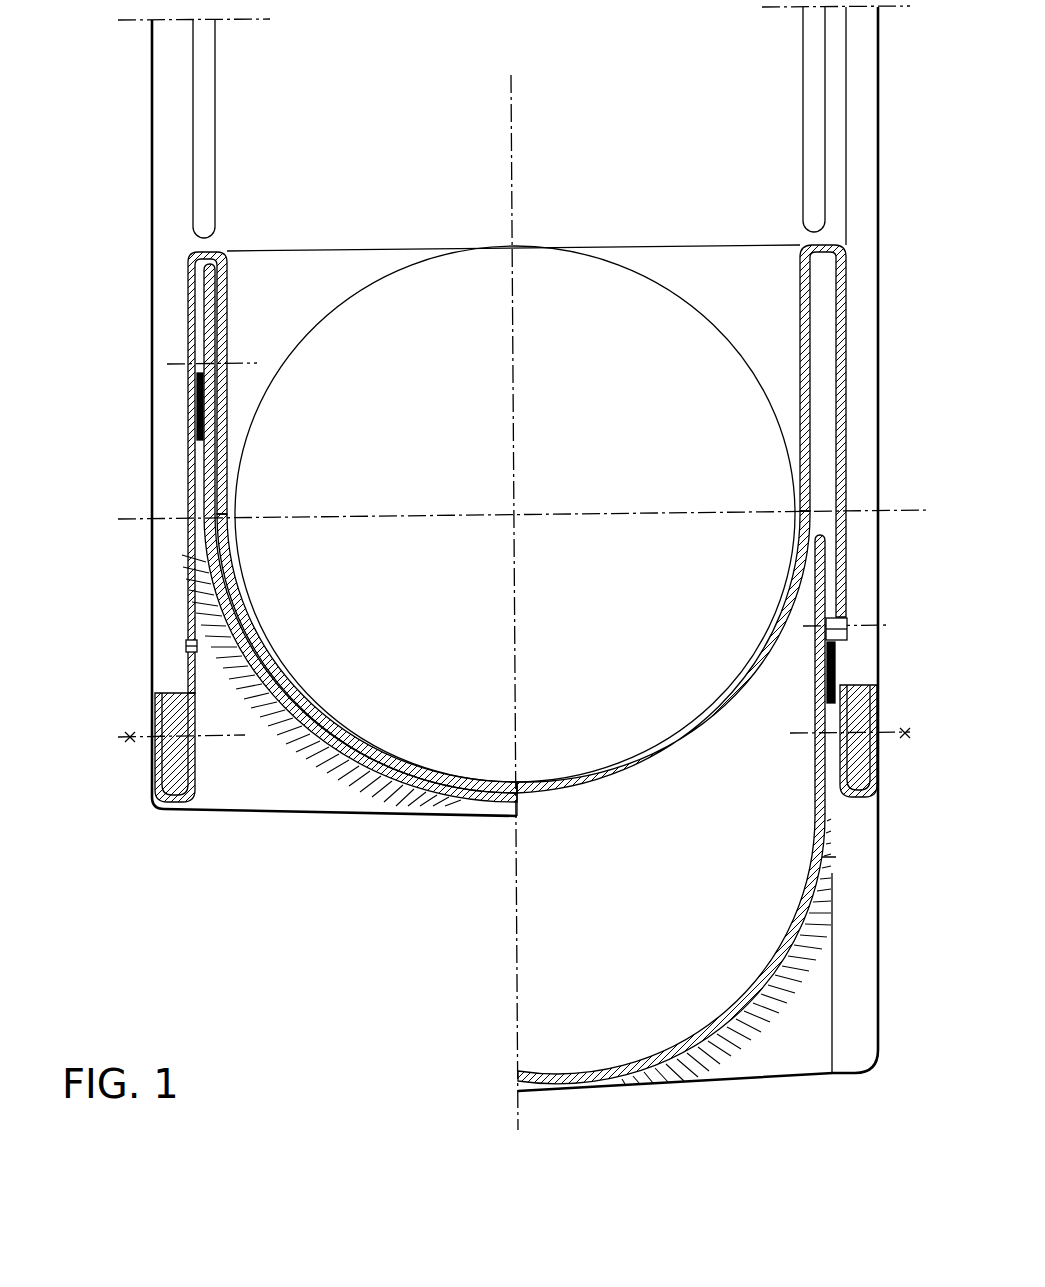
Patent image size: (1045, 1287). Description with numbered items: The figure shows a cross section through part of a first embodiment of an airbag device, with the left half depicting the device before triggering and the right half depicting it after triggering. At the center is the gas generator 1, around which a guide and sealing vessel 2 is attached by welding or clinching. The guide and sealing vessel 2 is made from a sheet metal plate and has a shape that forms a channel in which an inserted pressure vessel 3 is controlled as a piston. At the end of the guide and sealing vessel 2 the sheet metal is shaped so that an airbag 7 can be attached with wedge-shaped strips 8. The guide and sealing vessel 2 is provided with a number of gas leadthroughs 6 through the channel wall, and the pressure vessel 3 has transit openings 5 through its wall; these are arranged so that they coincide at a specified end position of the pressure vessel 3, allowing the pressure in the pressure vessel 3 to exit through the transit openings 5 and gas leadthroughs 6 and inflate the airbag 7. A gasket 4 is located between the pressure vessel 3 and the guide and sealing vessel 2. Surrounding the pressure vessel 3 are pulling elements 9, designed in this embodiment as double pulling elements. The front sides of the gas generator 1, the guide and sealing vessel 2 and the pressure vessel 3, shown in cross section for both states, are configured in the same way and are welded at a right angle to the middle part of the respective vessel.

The gas generator 1 is at (663, 287).
The guide and sealing vessel 2 is at (800, 282).
The pressure vessel 3 is at (273, 693).
The gasket 4 is at (212, 402).
The transit openings 5 is at (205, 365).
The gas leadthroughs 6 is at (190, 645).
The airbag 7 is at (212, 133).
The wedge-shaped strips 8 is at (177, 693).
The pulling elements 9 is at (148, 133).